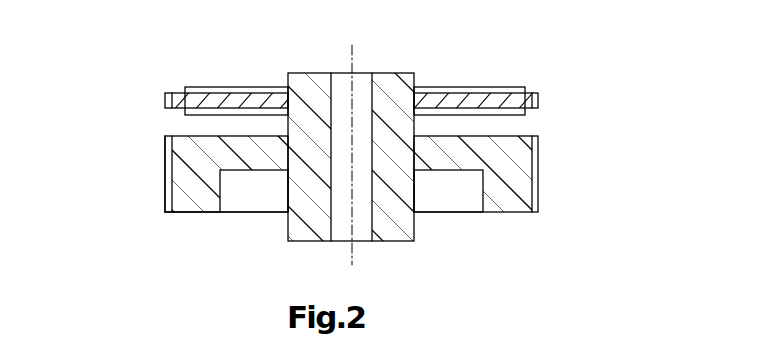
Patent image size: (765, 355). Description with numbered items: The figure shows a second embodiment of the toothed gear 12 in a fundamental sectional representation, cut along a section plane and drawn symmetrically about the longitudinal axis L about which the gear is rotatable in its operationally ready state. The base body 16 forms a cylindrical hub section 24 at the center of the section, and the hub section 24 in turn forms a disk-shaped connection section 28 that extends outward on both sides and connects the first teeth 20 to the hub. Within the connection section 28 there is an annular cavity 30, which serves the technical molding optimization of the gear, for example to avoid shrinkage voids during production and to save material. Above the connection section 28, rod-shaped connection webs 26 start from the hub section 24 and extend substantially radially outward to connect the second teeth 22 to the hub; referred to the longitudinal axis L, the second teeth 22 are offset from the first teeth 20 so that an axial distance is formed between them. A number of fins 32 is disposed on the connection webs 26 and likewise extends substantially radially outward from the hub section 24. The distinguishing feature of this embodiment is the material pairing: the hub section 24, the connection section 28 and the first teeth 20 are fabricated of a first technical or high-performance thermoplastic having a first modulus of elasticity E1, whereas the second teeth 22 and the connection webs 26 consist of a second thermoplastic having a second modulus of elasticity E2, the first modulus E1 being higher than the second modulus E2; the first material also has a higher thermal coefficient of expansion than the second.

The toothed gear 12 is at (99, 89).
The base body 16 is at (372, 177).
The first teeth 20 is at (168, 213).
The second teeth 22 is at (167, 98).
The hub section 24 is at (403, 233).
The connection webs 26 is at (228, 101).
The connection section 28 is at (237, 160).
The annular cavity 30 is at (455, 197).
The fins 32 is at (480, 88).
The first modulus of elasticity E1 is at (515, 163).
The second modulus of elasticity E2 is at (238, 72).
The longitudinal axis L is at (353, 53).